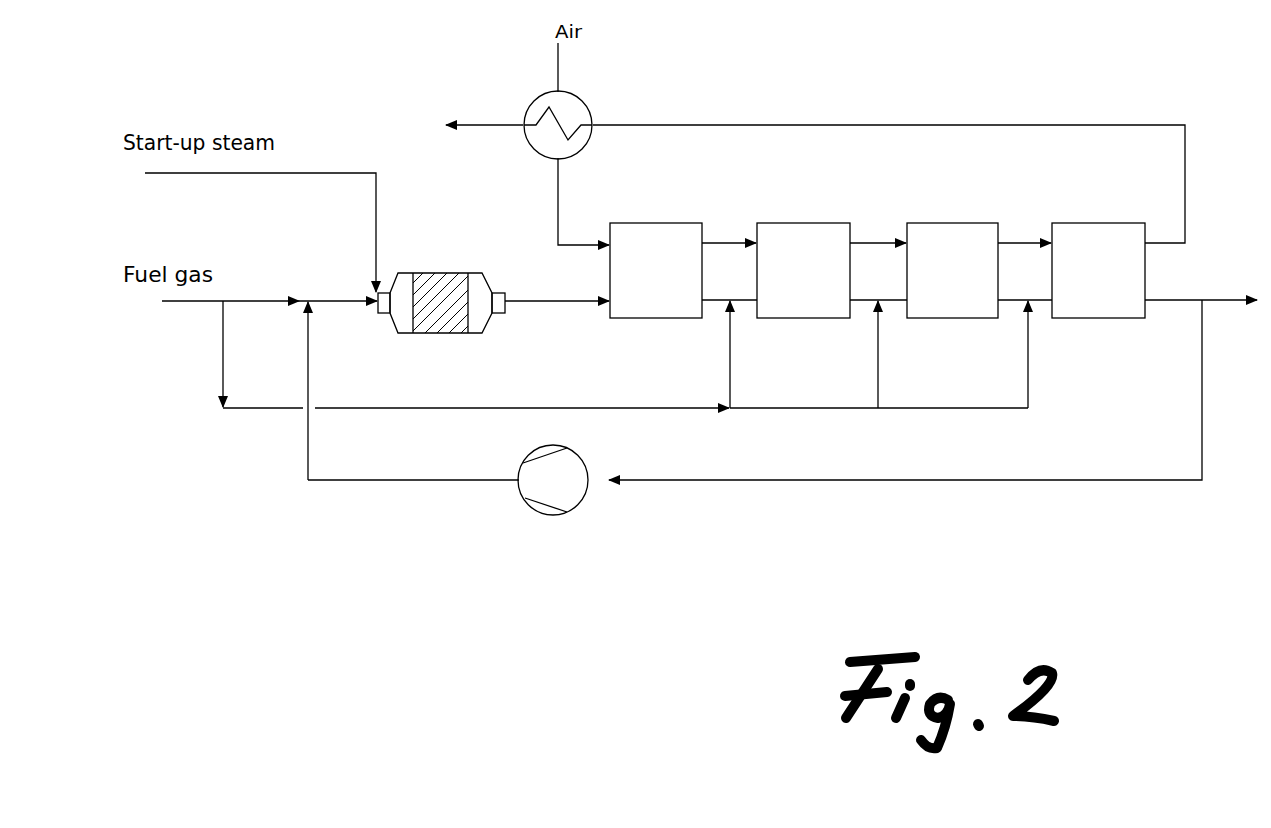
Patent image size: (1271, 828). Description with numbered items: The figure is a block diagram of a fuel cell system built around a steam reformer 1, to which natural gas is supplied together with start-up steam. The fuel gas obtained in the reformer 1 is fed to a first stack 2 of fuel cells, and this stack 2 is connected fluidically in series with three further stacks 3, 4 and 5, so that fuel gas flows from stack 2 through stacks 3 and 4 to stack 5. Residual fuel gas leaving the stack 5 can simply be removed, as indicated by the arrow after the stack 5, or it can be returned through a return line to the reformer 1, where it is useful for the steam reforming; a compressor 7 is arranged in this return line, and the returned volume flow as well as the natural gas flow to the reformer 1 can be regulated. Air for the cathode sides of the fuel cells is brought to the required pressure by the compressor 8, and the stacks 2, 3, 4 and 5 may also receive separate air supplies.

The steam reformer 1 is at (458, 268).
The first stack 2 is at (672, 293).
The further stack 3 is at (793, 286).
The further stack 4 is at (962, 292).
The further stack 5 is at (1086, 283).
The compressor 7 is at (541, 533).
The compressor 8 is at (604, 101).